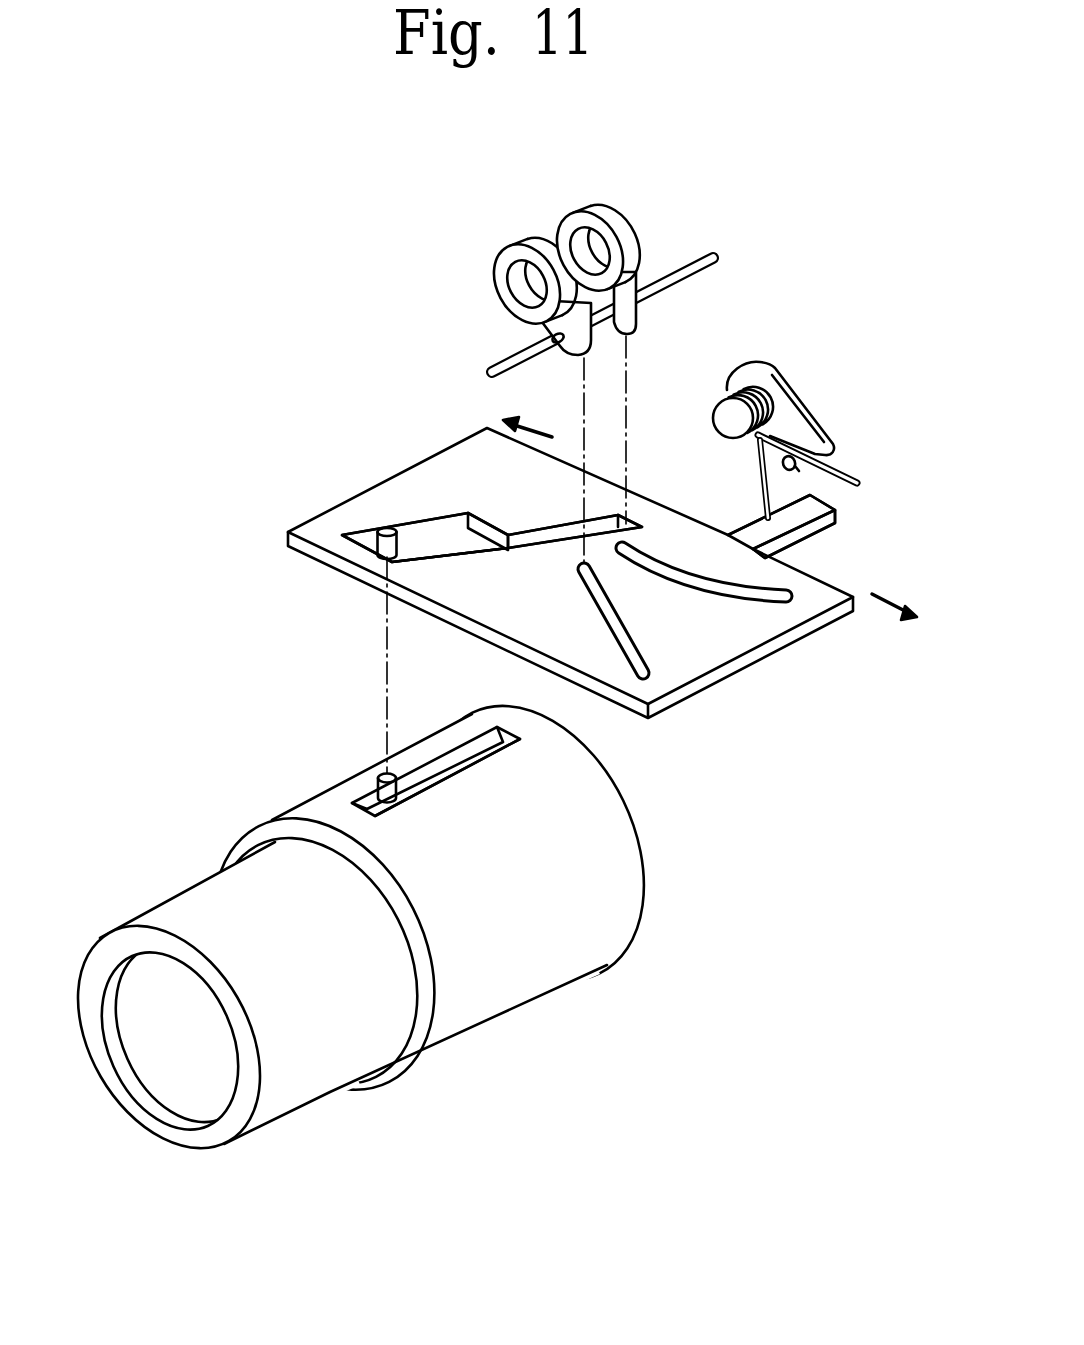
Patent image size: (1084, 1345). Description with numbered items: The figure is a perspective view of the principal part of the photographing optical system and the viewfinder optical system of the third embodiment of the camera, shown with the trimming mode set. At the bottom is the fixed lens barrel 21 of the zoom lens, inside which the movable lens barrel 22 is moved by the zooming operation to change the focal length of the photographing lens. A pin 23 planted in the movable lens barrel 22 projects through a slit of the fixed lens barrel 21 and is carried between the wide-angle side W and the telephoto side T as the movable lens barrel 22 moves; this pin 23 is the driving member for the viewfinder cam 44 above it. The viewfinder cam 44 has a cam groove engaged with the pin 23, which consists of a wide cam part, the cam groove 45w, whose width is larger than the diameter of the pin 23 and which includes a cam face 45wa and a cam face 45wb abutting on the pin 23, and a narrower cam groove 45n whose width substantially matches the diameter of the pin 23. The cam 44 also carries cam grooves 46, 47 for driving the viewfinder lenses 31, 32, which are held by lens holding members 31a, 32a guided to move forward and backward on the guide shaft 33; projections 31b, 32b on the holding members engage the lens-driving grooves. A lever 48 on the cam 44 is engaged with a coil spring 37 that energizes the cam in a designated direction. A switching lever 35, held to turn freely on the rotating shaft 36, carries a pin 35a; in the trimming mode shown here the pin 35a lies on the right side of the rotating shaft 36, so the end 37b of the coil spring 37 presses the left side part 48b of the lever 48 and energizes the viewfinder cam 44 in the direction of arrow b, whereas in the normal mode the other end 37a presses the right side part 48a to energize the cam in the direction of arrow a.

The fixed lens barrel 21 is at (572, 965).
The movable lens barrel 22 is at (332, 1075).
The pin 23 is at (368, 534).
The viewfinder lens 31 is at (475, 251).
The lens holding member 31a is at (492, 284).
The projection 31b is at (578, 360).
The viewfinder lens 32 is at (635, 222).
The lens holding member 32a is at (628, 226).
The projection 32b is at (640, 322).
The guide shaft 33 is at (720, 262).
The switching lever 35 is at (825, 426).
The pin 35a is at (798, 468).
The rotating shaft 36 is at (722, 410).
The coil spring 37 is at (793, 440).
The end of coil spring 37a is at (845, 482).
The end of coil spring 37b is at (757, 472).
The viewfinder cam 44 is at (402, 485).
The cam groove 45n is at (543, 538).
The cam groove 45w is at (425, 555).
The cam face 45wa is at (467, 552).
The cam face 45wb is at (467, 512).
The cam groove 46 is at (657, 676).
The cam groove 47 is at (775, 612).
The lever 48 is at (805, 513).
The side part 48a is at (790, 539).
The side part 48b is at (740, 532).
The wide-angle side W is at (452, 771).
The telephoto side T is at (447, 794).
The arrow a is at (539, 438).
The arrow b is at (894, 624).